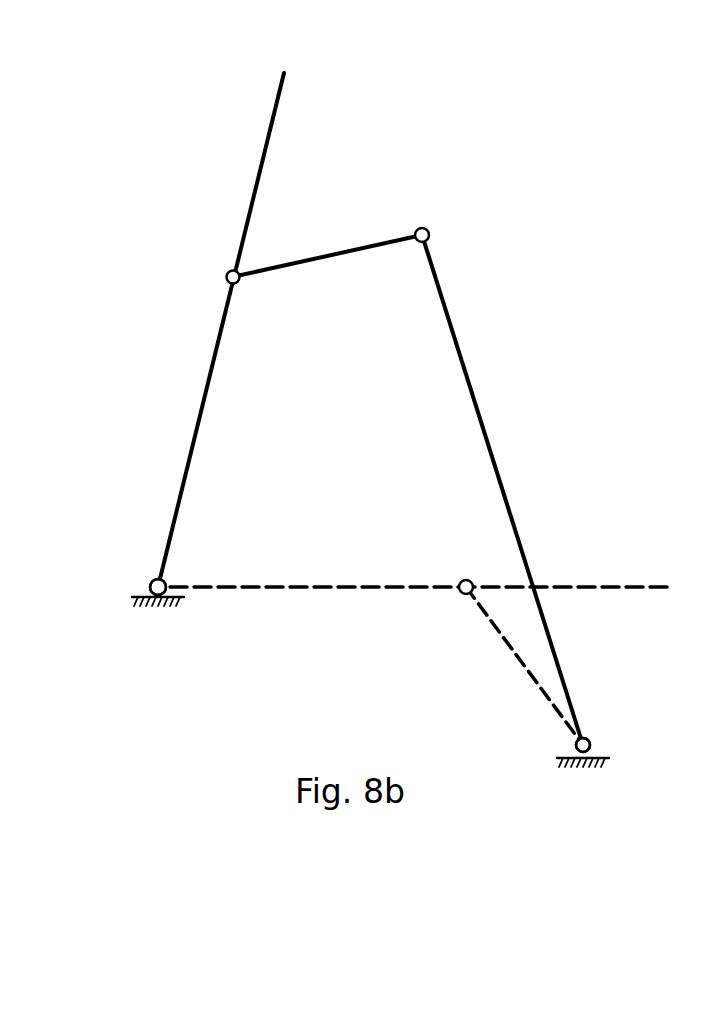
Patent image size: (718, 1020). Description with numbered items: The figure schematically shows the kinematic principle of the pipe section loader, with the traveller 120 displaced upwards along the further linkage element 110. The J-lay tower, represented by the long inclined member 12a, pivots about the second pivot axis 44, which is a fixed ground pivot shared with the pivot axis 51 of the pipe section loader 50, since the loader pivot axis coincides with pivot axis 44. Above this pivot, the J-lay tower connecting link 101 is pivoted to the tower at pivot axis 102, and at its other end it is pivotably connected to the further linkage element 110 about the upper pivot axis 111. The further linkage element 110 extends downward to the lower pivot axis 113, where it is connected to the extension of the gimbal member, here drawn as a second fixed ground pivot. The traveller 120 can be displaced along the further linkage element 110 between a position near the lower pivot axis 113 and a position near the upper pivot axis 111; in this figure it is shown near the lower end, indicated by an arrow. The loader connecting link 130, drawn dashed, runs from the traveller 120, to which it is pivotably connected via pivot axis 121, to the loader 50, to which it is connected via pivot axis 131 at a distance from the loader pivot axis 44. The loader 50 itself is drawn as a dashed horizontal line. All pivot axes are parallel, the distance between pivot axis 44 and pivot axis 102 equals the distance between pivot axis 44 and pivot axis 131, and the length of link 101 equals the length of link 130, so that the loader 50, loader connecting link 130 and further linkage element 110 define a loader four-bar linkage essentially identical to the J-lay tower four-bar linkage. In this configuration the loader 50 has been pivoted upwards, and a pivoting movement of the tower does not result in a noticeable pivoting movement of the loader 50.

The upper arm link 12a is at (186, 473).
The J-lay tower connecting link 101 is at (322, 260).
The pivot axis 102 is at (240, 272).
The further linkage element 110 is at (489, 441).
The upper pivot axis 111 is at (428, 230).
The lower pivot axis 113 is at (594, 740).
The pivot axis 121 is at (583, 745).
The traveller 120 is at (609, 723).
The loader connecting link 130 is at (515, 655).
The pivot axis 131 is at (459, 596).
The second pivot axis 44 is at (166, 580).
The pivot axis 51 is at (158, 587).
The pipe section loader 50 is at (322, 592).